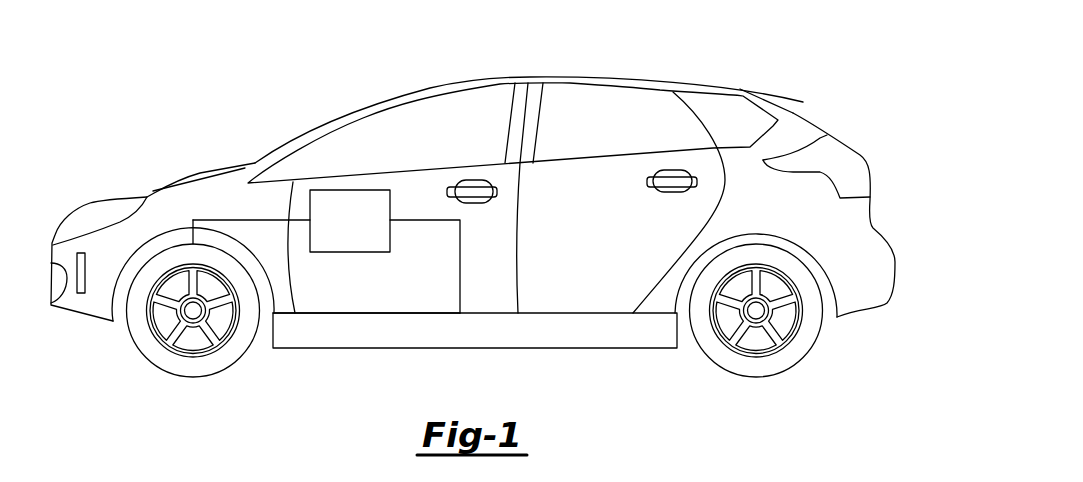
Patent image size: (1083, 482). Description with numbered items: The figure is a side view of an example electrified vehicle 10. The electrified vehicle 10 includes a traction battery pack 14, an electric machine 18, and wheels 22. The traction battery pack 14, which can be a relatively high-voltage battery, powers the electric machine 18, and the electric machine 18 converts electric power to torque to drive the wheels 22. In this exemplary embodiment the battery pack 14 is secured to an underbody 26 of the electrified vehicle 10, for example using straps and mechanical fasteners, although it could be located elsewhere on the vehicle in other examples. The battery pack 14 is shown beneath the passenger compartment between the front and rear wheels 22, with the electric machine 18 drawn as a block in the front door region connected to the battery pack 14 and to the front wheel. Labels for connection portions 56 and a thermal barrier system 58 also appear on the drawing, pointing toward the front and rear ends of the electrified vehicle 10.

The electrified vehicle 10 is at (475, 207).
The traction battery pack 14 is at (600, 348).
The electric machine 18 is at (310, 208).
The wheels 22 is at (152, 360).
The underbody 26 is at (340, 313).
The connection portions 56 is at (58, 202).
The thermal barrier system 58 is at (893, 157).